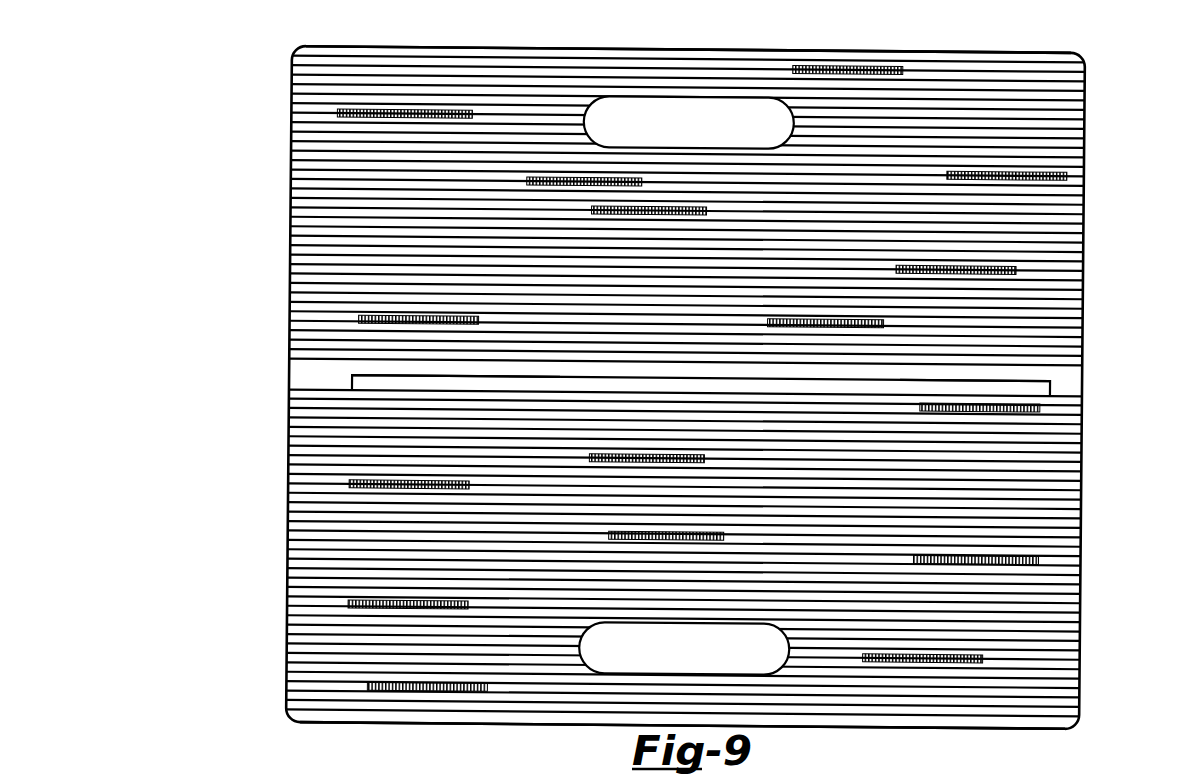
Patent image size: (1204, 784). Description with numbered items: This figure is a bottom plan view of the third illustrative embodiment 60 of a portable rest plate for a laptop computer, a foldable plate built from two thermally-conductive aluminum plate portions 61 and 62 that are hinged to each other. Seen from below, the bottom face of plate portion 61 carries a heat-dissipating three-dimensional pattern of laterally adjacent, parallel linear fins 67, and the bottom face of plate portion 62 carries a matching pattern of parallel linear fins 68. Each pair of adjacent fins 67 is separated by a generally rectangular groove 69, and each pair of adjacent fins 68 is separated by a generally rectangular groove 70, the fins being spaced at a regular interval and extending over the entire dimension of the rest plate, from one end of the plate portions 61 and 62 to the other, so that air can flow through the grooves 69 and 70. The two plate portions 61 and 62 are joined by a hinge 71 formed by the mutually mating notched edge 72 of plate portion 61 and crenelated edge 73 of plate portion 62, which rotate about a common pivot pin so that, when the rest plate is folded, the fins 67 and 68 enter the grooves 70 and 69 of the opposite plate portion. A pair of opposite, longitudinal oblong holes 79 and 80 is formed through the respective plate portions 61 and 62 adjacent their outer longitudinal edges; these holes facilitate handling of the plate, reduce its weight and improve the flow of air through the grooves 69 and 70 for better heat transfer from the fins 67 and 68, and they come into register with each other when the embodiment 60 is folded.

The third illustrative embodiment of portable rest plate 60 is at (234, 224).
The plate portion 61 is at (457, 53).
The plate portion 62 is at (290, 600).
The linear fins 67 is at (1072, 130).
The linear fins 68 is at (1074, 497).
The rectangular groove 69 is at (1060, 186).
The rectangular groove 70 is at (1060, 597).
The hinge 71 is at (228, 460).
The notched edge 72 is at (1005, 383).
The crenelated edge 73 is at (398, 380).
The oblong hole 79 is at (682, 117).
The oblong hole 80 is at (731, 658).